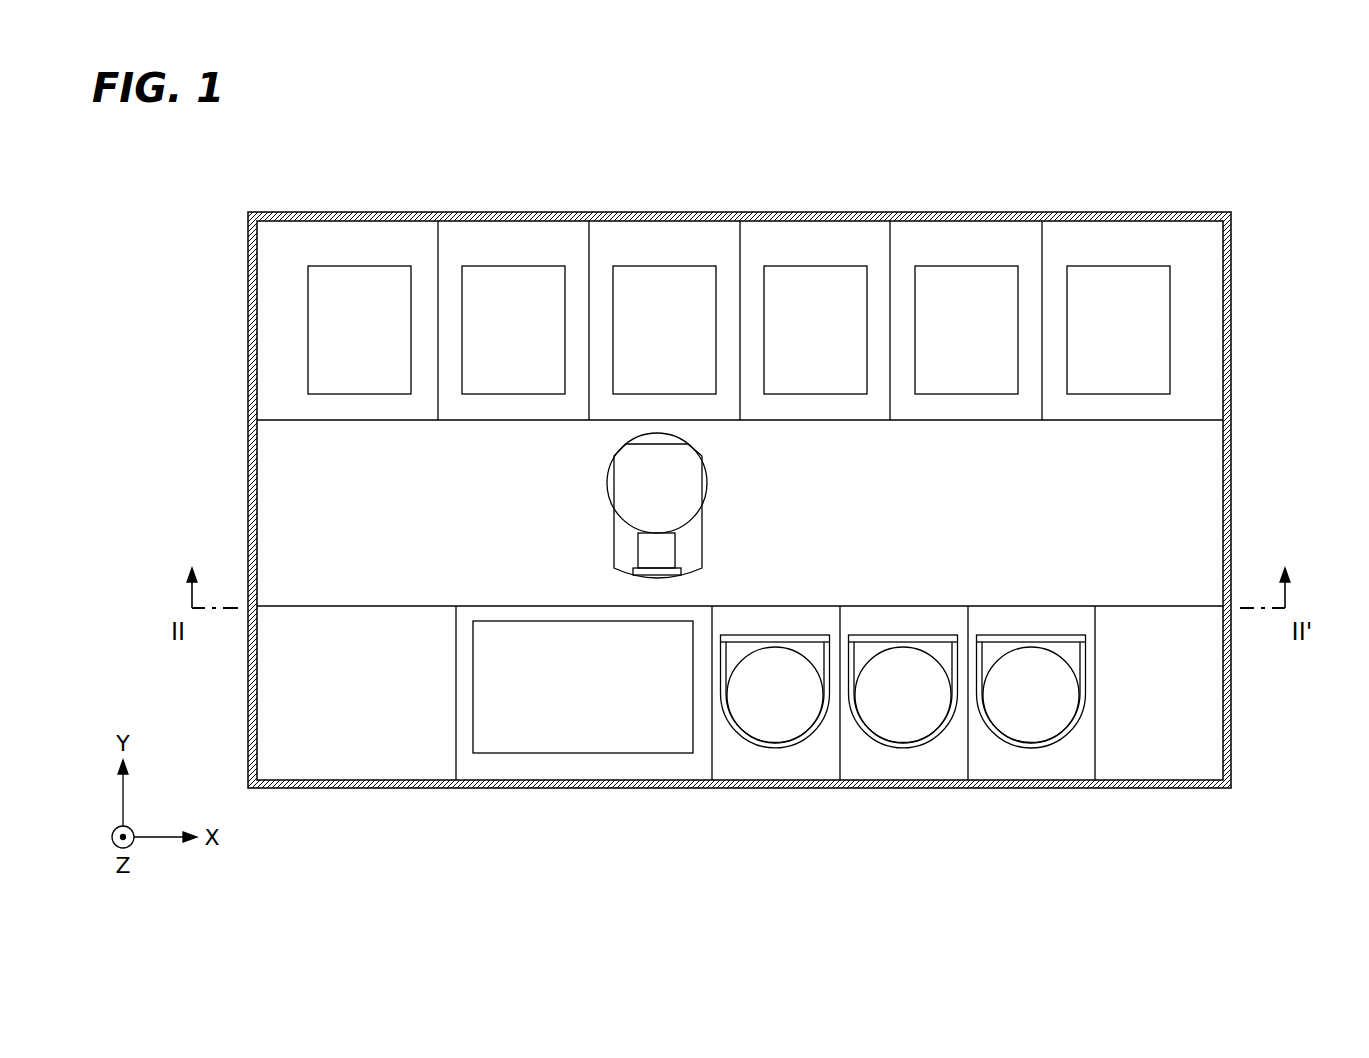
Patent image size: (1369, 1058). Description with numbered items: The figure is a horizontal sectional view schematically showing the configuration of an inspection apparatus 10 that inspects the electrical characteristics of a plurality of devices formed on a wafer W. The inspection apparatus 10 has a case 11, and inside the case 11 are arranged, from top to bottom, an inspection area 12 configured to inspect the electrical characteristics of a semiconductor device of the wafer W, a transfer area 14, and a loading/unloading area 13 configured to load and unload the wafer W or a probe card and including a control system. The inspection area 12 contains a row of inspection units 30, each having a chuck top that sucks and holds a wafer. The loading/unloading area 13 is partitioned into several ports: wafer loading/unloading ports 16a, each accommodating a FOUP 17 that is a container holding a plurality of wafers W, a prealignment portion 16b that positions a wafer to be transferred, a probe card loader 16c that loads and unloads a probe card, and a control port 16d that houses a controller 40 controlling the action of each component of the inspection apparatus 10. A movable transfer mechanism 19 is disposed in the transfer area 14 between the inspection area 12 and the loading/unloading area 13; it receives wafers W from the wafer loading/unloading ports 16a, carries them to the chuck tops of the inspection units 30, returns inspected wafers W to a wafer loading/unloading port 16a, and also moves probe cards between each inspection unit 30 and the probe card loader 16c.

The inspection apparatus 10 is at (801, 173).
The case 11 is at (1233, 291).
The inspection area 12 is at (168, 215).
The loading/unloading area 13 is at (168, 780).
The transfer area 14 is at (168, 423).
The wafer loading/unloading port 16a is at (770, 768).
The prealignment portion 16b is at (1162, 768).
The probe card loader 16c is at (397, 768).
The control port 16d is at (681, 768).
The FOUP 17 is at (813, 633).
The transfer mechanism 19 is at (703, 537).
The inspection unit 30 is at (962, 256).
The controller 40 is at (612, 753).
The wafer W is at (703, 487).